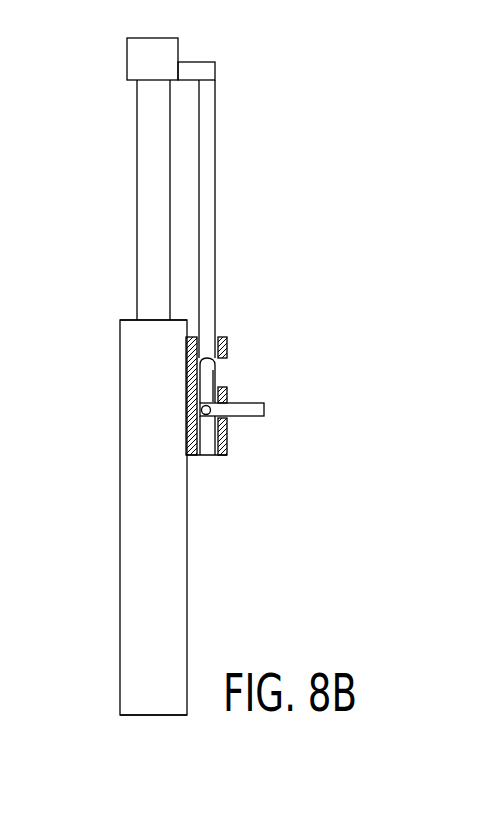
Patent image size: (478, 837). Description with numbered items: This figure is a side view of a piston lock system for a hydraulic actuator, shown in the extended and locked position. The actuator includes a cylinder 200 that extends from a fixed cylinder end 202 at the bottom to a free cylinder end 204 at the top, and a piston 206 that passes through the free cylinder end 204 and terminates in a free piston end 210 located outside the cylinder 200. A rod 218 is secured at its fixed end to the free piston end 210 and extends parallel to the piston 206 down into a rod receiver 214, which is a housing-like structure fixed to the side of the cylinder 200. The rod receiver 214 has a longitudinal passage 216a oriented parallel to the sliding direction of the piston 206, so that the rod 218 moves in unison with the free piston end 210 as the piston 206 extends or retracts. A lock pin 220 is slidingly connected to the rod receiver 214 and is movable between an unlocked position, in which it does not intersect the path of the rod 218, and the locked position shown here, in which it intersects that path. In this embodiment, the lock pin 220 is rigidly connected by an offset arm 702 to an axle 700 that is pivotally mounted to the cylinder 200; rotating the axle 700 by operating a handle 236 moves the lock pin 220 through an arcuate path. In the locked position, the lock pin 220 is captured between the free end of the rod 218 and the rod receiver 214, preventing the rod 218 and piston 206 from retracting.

The cylinder 200 is at (138, 610).
The fixed cylinder end 202 is at (152, 717).
The free cylinder end 204 is at (131, 319).
The piston 206 is at (153, 125).
The free piston end 210 is at (152, 47).
The rod receiver 214 is at (225, 442).
The longitudinal passage 216a is at (204, 443).
The rod 218 is at (207, 139).
The lock pin 220 is at (218, 369).
The handle 236 is at (252, 410).
The axle 700 is at (218, 412).
The offset arm 702 is at (207, 388).